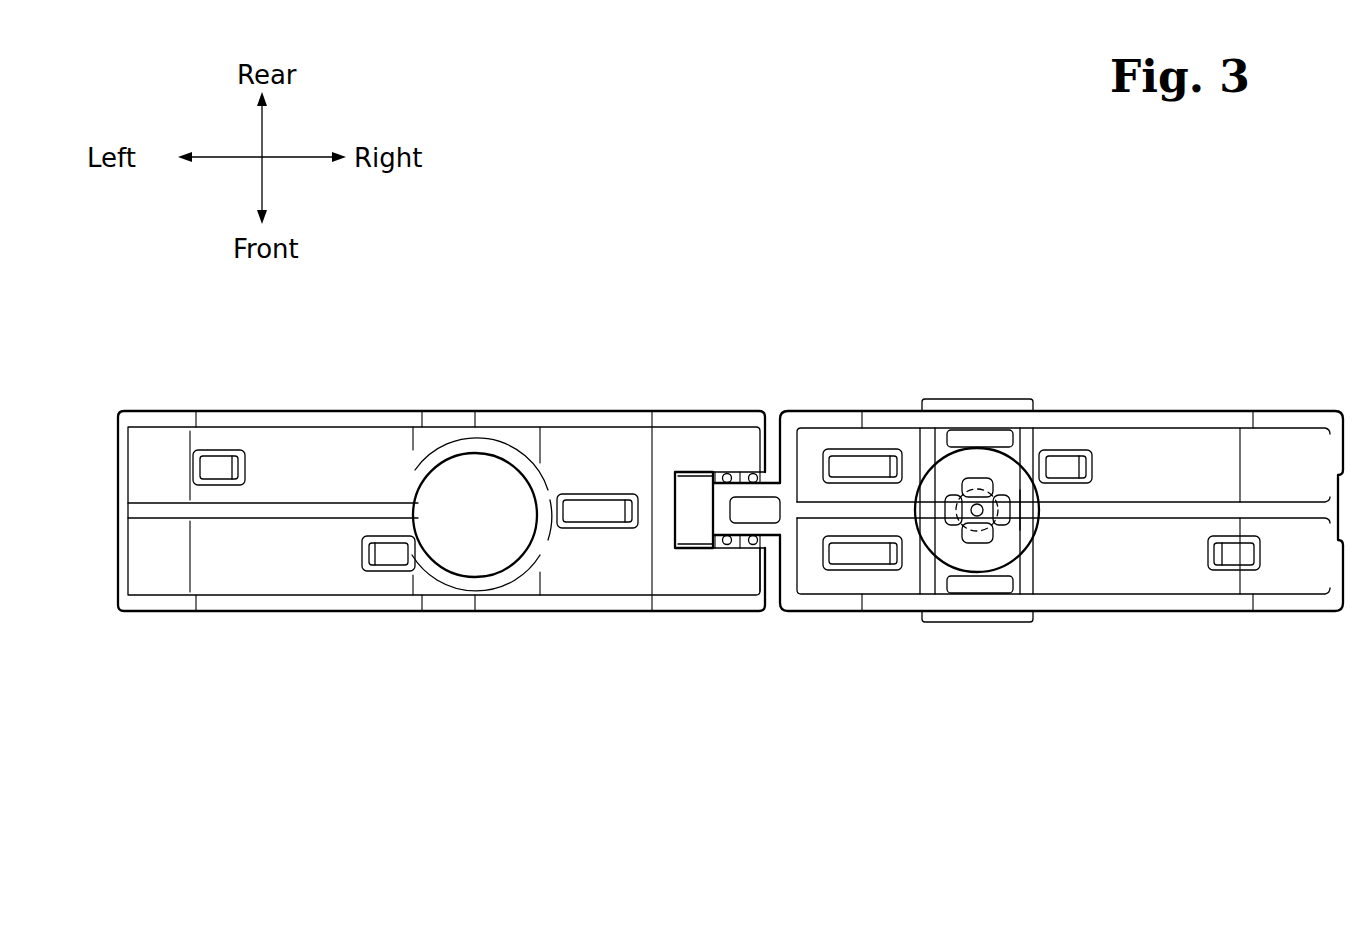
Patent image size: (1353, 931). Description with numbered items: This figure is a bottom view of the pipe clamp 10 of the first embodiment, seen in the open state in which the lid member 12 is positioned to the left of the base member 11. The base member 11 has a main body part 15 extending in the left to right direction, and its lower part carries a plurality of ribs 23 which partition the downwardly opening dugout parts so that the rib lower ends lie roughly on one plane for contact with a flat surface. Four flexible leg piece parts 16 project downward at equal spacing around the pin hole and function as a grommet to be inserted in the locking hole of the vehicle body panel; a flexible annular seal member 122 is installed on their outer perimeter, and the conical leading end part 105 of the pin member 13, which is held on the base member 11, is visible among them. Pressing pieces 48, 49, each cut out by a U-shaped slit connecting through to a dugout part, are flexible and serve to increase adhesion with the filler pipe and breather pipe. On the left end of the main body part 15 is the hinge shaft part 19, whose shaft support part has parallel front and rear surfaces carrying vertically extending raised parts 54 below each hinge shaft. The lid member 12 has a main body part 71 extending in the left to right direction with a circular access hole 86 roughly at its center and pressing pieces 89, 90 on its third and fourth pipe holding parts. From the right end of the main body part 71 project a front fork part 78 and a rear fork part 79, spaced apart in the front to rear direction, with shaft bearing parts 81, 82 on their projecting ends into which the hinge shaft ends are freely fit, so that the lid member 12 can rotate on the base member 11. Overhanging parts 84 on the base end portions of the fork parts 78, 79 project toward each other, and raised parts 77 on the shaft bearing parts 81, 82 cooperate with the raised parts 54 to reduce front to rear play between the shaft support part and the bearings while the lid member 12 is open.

The pipe clamp 10 is at (557, 248).
The base member 11 is at (1265, 280).
The lid member 12 is at (314, 345).
The pin member 13 is at (1002, 480).
The main body part 15 is at (1112, 412).
The leg piece parts 16 is at (952, 500).
The hinge shaft part 19 is at (793, 540).
The ribs 23 is at (1170, 413).
The pressing piece 48 is at (1068, 462).
The pressing piece 49 is at (880, 462).
The raised parts 54 is at (724, 482).
The main body part 71 is at (520, 412).
The raised parts 77 is at (768, 411).
The front fork part 78 is at (684, 581).
The rear fork part 79 is at (684, 447).
The shaft bearing part 81 is at (757, 600).
The shaft bearing part 82 is at (758, 496).
The overhanging parts 84 is at (726, 473).
The access hole 86 is at (482, 456).
The pressing piece 89 is at (222, 462).
The pressing piece 90 is at (593, 512).
The leading end part 105 is at (960, 548).
The seal member 122 is at (1022, 522).